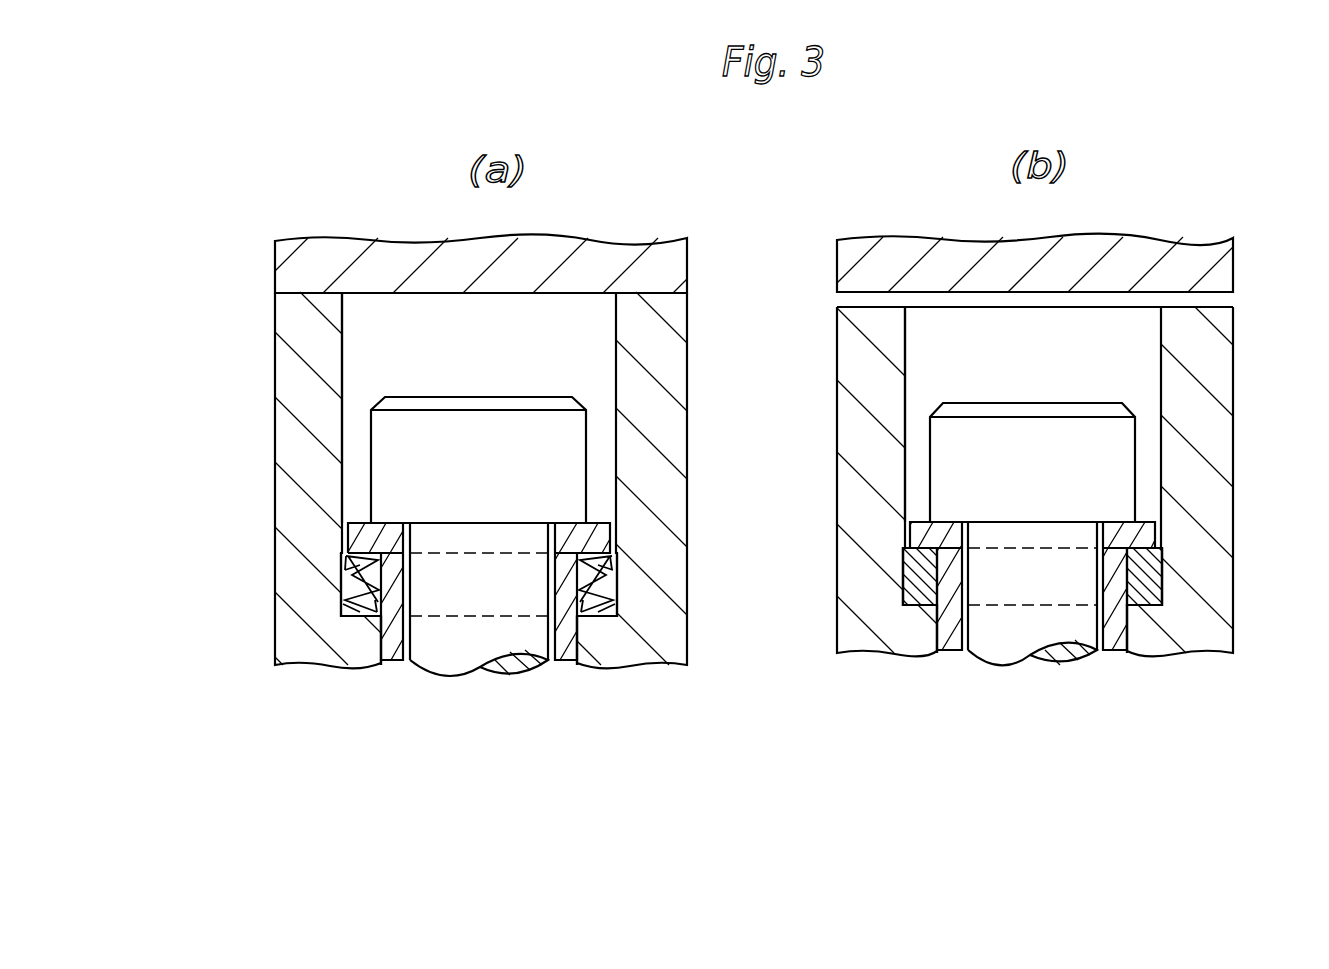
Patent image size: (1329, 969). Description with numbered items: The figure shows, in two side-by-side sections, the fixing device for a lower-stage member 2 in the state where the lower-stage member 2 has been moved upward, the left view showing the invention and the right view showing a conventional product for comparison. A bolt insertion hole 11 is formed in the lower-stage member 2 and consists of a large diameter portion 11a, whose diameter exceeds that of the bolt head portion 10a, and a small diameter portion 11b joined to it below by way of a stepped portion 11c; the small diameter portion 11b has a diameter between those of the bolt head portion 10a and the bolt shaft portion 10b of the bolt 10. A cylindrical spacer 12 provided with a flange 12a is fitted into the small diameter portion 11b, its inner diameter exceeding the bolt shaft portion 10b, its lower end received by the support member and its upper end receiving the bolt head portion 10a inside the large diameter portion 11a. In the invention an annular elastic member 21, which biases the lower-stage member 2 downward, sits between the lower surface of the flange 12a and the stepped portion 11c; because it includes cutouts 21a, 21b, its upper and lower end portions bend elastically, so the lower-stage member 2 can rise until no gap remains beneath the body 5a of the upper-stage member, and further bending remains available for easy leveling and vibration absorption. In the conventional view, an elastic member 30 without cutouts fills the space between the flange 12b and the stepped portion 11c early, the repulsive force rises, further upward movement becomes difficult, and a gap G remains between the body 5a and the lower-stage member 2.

The lower-stage member 2 is at (652, 490).
The body of the upper-stage member 5a is at (612, 258).
The bolt 10 is at (390, 478).
The bolt head portion 10a is at (482, 433).
The bolt shaft portion 10b is at (462, 648).
The bolt insertion hole 11 is at (342, 308).
The large diameter portion 11a is at (342, 401).
The small diameter portion 11b is at (383, 625).
The stepped portion 11c is at (345, 594).
The cylindrical spacer 12 is at (392, 605).
The flange 12a is at (355, 543).
The flange of sleeve 12b is at (1153, 532).
The annular elastic member 21 is at (598, 616).
The cutout 21a is at (618, 572).
The cutout 21b is at (620, 605).
The elastic member 30 is at (1140, 578).
The gap G is at (1214, 300).